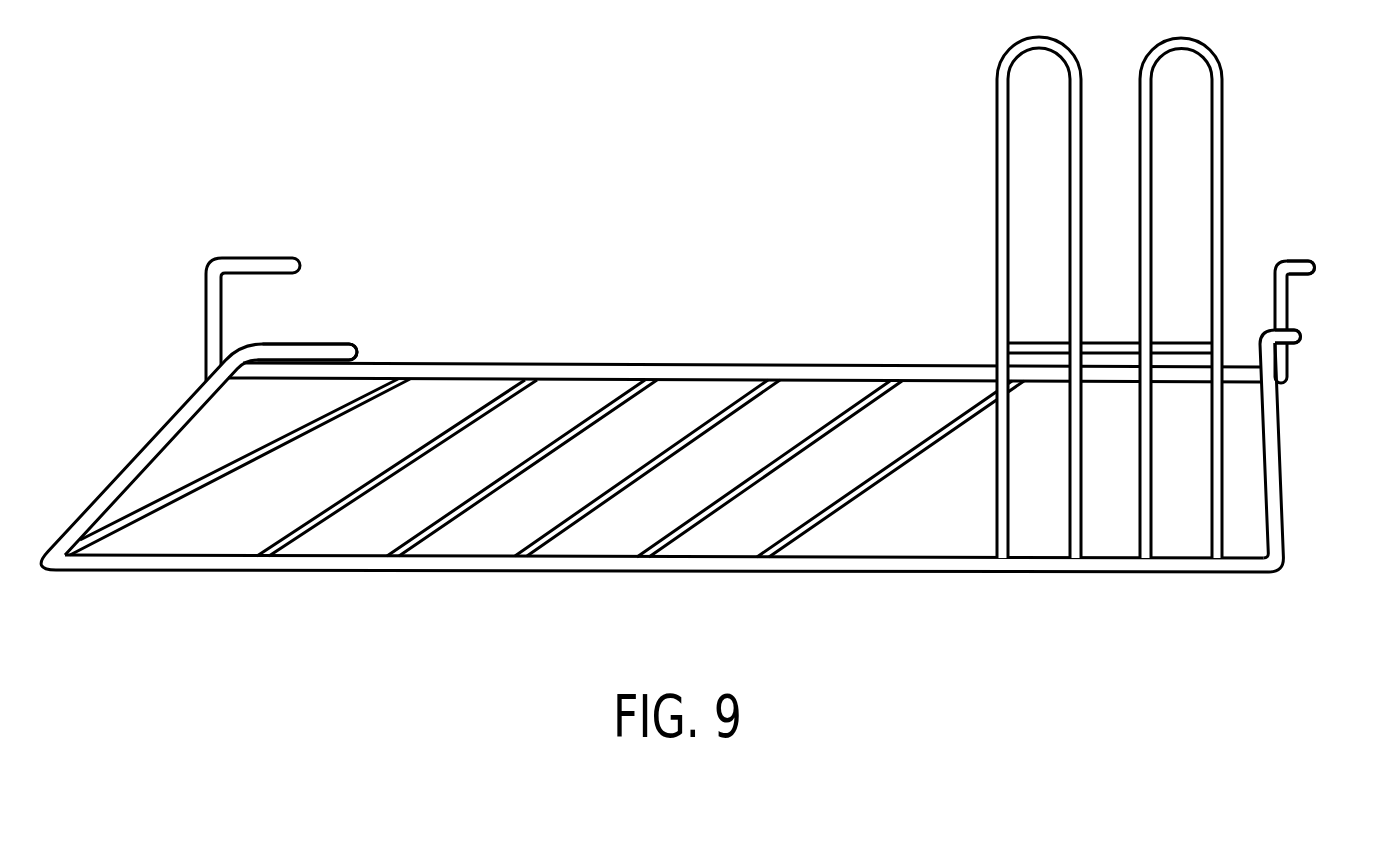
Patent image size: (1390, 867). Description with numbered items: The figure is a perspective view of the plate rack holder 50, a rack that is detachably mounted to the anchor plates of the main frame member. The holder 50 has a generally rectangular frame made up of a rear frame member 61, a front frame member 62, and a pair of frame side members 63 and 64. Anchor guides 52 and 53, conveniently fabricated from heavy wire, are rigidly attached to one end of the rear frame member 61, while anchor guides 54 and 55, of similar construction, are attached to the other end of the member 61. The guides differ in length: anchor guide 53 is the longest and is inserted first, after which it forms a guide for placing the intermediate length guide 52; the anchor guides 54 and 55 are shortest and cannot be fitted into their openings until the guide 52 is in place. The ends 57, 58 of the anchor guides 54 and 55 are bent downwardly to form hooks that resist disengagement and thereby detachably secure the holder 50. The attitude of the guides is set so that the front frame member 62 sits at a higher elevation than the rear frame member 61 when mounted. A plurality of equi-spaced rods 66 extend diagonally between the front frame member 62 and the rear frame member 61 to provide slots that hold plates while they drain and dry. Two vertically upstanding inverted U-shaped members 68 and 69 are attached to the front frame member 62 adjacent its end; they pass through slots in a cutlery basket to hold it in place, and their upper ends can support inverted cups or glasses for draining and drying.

The plate rack holder 50 is at (712, 359).
The intermediate length anchor guide 52 is at (273, 258).
The anchor guide 53 is at (335, 344).
The anchor guide 54 is at (1329, 284).
The anchor guide 55 is at (1299, 316).
The bent end 57 is at (1316, 270).
The bent end 58 is at (1303, 337).
The rear frame member 61 is at (592, 364).
The front frame member 62 is at (430, 572).
The frame side member 63 is at (170, 420).
The frame side member 64 is at (1280, 487).
The rods 66 is at (182, 498).
The inverted U-shaped member 68 is at (997, 77).
The inverted U-shaped member 69 is at (1220, 80).